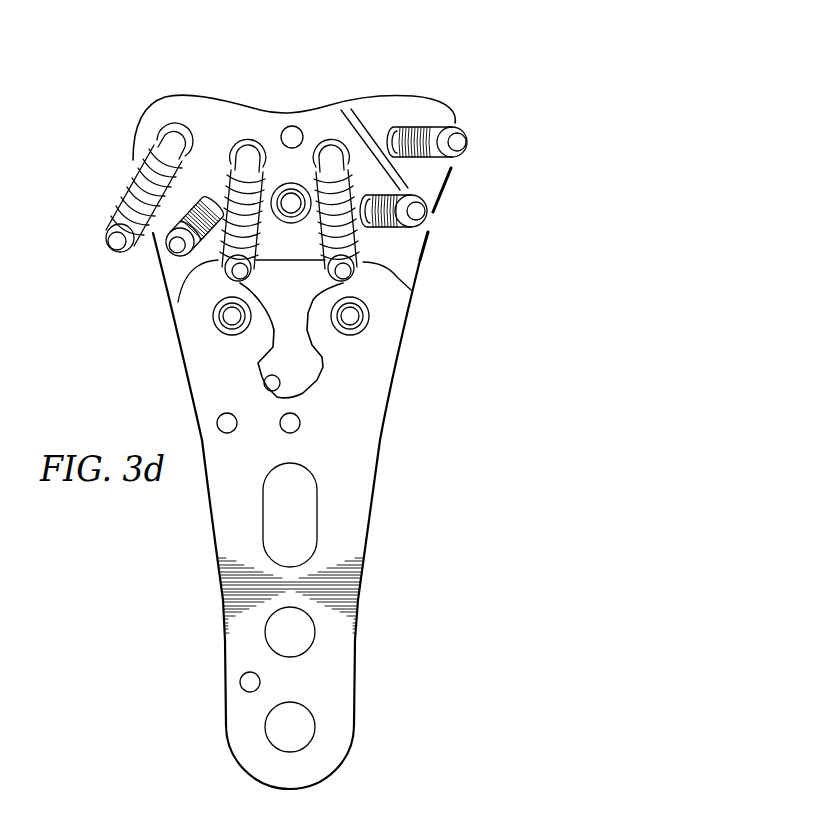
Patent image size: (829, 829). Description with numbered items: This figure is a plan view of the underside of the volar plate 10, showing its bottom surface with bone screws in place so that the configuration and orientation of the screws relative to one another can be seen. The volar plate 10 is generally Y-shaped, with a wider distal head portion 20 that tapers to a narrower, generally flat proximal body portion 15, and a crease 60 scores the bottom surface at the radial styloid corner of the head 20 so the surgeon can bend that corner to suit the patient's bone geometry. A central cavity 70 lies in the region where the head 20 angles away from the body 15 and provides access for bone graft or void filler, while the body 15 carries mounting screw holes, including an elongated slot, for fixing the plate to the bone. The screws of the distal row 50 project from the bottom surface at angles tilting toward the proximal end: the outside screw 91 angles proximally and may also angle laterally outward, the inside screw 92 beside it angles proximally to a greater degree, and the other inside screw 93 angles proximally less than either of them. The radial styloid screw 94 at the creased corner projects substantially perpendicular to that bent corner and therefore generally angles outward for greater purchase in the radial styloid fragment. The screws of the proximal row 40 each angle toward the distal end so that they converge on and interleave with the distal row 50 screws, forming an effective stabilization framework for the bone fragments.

The volar plate 10 is at (95, 125).
The proximal body portion 15 is at (378, 741).
The distal head portion 20 is at (240, 65).
The proximal row 40 is at (473, 229).
The distal row 50 is at (490, 137).
The crease 60 is at (368, 118).
The central cavity 70 is at (265, 385).
The outside screw 91 is at (112, 214).
The inside screw 92 is at (178, 302).
The other inside screw 93 is at (411, 290).
The radial styloid screw 94 is at (424, 122).